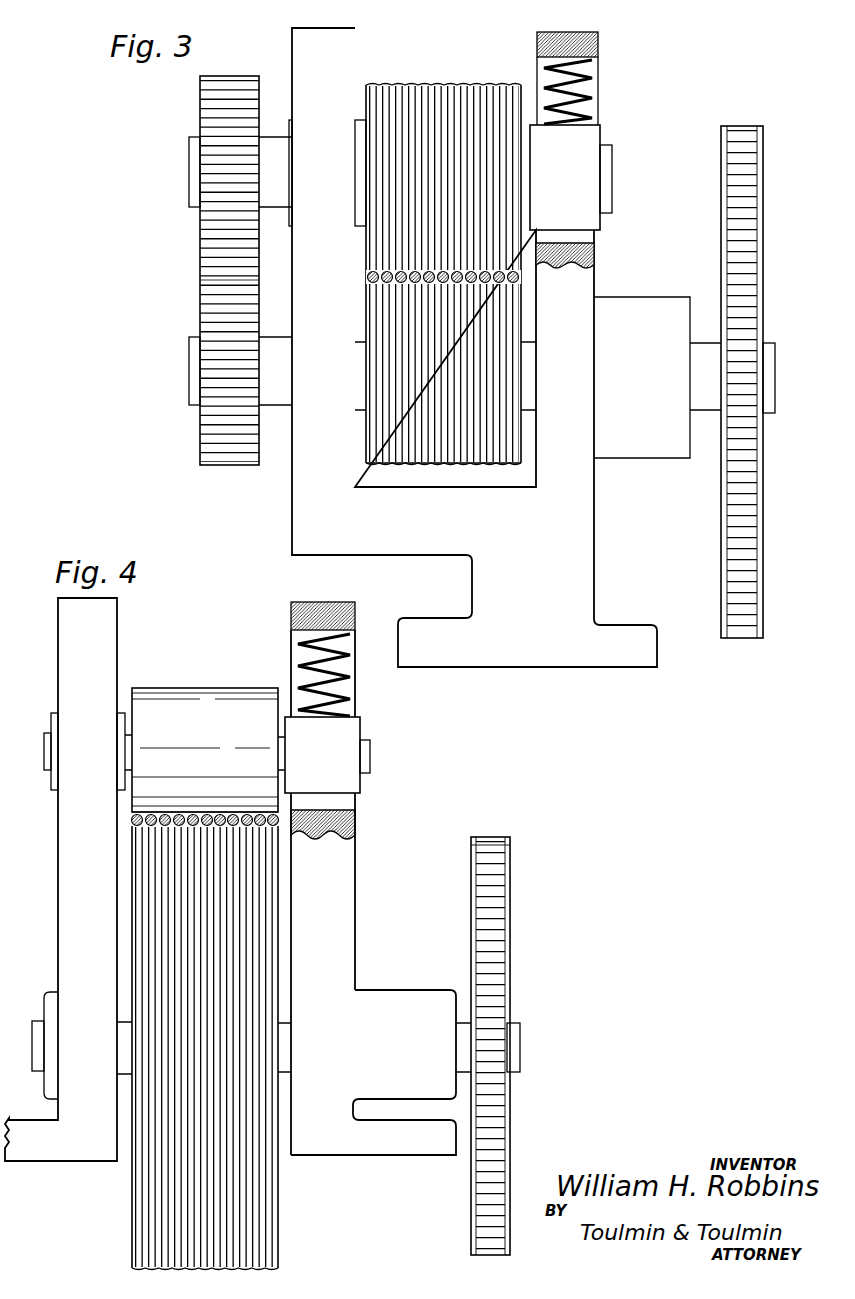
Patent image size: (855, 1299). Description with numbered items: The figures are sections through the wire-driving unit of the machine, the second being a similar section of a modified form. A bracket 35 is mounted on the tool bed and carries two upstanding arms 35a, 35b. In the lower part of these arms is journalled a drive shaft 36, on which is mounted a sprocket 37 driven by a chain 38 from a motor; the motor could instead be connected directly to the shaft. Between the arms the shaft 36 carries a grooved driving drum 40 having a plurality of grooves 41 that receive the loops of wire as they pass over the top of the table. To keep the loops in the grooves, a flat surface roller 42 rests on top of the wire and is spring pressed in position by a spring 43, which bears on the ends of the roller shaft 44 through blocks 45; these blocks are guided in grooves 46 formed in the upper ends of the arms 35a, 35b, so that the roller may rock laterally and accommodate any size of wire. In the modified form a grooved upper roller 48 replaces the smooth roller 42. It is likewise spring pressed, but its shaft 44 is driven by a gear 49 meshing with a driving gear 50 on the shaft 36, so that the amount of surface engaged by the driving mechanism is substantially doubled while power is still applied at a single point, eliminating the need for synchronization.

In FIG. 3, the bracket 35 is at (580, 558).
In FIG. 4, the bracket 35 is at (337, 1145).
In FIG. 4, the upstanding arm 35a is at (335, 910).
In FIG. 4, the upstanding arm 35b is at (58, 856).
In FIG. 3, the drive shaft 36 is at (775, 362).
In FIG. 4, the drive shaft 36 is at (522, 1033).
In FIG. 3, the sprocket 37 is at (764, 142).
In FIG. 4, the sprocket 37 is at (512, 852).
In FIG. 4, the chain 38 is at (497, 838).
In FIG. 3, the grooved driving drum 40 is at (490, 320).
In FIG. 4, the grooved driving drum 40 is at (272, 1212).
In FIG. 4, the grooves 41 is at (271, 1268).
In FIG. 4, the flat surface roller 42 is at (212, 705).
In FIG. 3, the spring 43 is at (588, 100).
In FIG. 4, the spring 43 is at (345, 695).
In FIG. 3, the roller shaft 44 is at (193, 152).
In FIG. 4, the roller shaft 44 is at (370, 752).
In FIG. 3, the blocks 45 is at (292, 124).
In FIG. 4, the blocks 45 is at (55, 713).
In FIG. 4, the grooves 46 is at (348, 803).
In FIG. 3, the grooved upper roller 48 is at (517, 90).
In FIG. 3, the gear 49 is at (210, 105).
In FIG. 3, the driving gear 50 is at (208, 305).